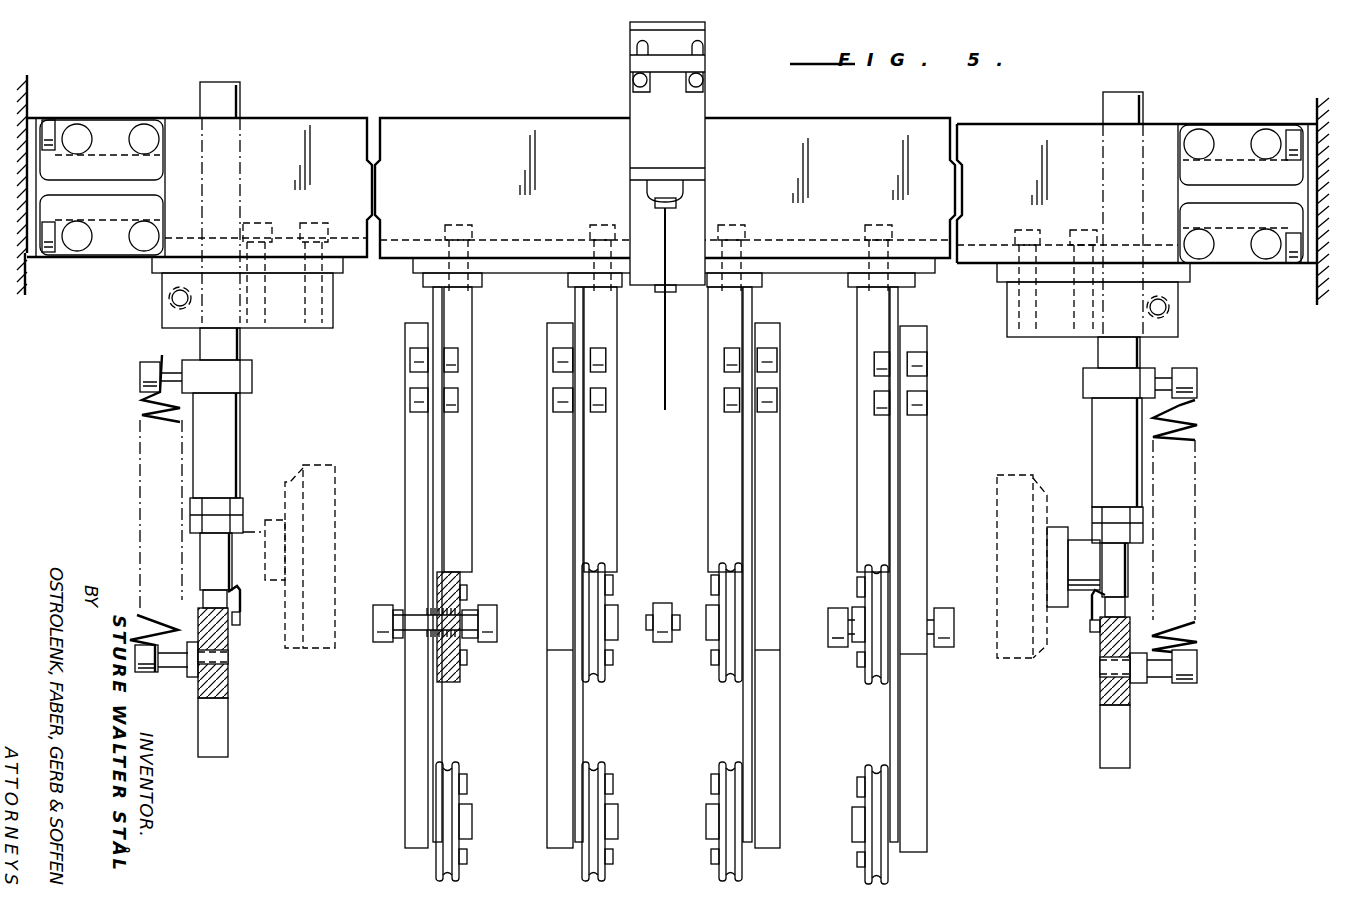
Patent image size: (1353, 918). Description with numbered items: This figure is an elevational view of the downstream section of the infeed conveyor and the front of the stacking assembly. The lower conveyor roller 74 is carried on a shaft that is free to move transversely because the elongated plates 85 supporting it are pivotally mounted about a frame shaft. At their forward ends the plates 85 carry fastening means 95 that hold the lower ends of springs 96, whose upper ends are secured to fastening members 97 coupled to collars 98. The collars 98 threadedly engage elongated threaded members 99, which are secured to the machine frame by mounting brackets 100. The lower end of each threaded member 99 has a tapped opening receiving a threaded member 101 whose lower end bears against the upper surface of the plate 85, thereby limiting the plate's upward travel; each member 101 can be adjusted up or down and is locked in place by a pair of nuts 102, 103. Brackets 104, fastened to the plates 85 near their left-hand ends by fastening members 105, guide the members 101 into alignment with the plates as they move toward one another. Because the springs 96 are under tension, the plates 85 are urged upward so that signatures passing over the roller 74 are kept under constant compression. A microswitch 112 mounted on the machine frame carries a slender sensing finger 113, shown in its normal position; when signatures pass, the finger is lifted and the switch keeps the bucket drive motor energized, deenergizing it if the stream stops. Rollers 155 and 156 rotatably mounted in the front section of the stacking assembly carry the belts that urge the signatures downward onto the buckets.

The roller 74 is at (318, 465).
The elongated plates 85 is at (230, 685).
The fastening means 95 is at (146, 672).
The springs 96 is at (140, 505).
The fastening members 97 is at (140, 378).
The collars 98 is at (252, 383).
The elongated threaded members 99 is at (240, 352).
The mounting brackets 100 is at (333, 304).
The threaded member 101 is at (210, 598).
The nut 102 is at (243, 500).
The nut 103 is at (243, 520).
The brackets 104 is at (238, 590).
The fastening members 105 is at (240, 622).
The microswitch 112 is at (630, 143).
The sensing finger 113 is at (665, 372).
The rollers 155 is at (460, 676).
The rollers 156 is at (457, 768).